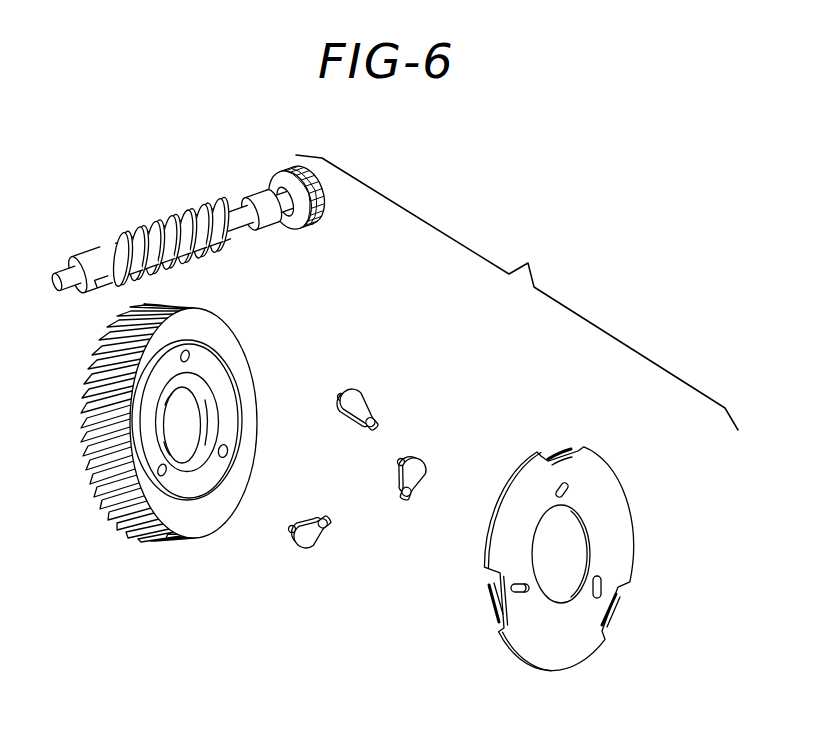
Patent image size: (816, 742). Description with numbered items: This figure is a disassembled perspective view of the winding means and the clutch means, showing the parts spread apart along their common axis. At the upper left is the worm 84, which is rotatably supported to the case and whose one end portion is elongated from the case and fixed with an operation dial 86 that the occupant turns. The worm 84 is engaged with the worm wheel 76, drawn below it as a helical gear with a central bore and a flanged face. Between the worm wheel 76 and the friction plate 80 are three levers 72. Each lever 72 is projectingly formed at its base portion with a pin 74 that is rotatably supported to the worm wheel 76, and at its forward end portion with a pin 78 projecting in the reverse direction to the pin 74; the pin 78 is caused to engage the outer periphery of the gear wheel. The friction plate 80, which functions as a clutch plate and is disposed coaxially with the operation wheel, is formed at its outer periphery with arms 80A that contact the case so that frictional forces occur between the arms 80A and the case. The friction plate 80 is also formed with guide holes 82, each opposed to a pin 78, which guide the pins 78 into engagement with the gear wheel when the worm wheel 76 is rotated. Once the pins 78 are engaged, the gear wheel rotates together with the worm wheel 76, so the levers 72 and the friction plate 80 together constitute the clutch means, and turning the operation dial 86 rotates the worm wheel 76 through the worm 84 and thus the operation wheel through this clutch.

The lever 72 is at (363, 396).
The pin 74 is at (341, 404).
The worm wheel 76 is at (246, 388).
The pin 78 is at (379, 425).
The friction plate 80 is at (621, 517).
The arm 80A is at (553, 451).
The guide hole 82 is at (556, 495).
The worm 84 is at (200, 251).
The operation dial 86 is at (311, 223).